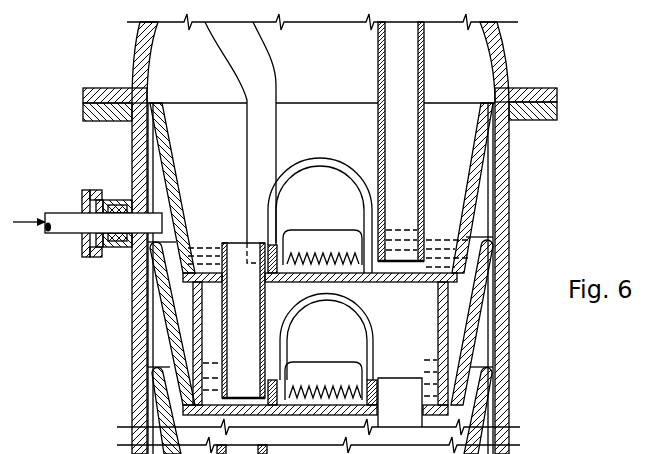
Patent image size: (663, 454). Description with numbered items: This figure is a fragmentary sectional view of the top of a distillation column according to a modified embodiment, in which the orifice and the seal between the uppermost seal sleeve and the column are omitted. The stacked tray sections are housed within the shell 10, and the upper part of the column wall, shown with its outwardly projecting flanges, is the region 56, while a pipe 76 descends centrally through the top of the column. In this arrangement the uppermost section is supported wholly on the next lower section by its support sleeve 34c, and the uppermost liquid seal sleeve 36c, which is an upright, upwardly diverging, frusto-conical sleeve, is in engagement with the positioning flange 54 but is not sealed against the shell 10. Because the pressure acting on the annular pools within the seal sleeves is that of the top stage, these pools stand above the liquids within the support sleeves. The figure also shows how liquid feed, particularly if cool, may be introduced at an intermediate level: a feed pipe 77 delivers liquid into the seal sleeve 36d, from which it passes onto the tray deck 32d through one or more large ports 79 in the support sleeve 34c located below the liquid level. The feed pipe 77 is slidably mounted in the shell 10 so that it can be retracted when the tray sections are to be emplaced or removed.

The shell 10 is at (506, 172).
The positioning flange 54 is at (150, 170).
The upper housing wall 56 is at (140, 54).
The pipe 76 is at (268, 60).
The feed pipe 77 is at (57, 235).
The ports 79 is at (192, 392).
The uppermost liquid seal sleeve 36c is at (166, 170).
The liquid seal sleeve 36d is at (168, 326).
The support sleeve 34c is at (442, 312).
The tray deck 32d is at (293, 404).